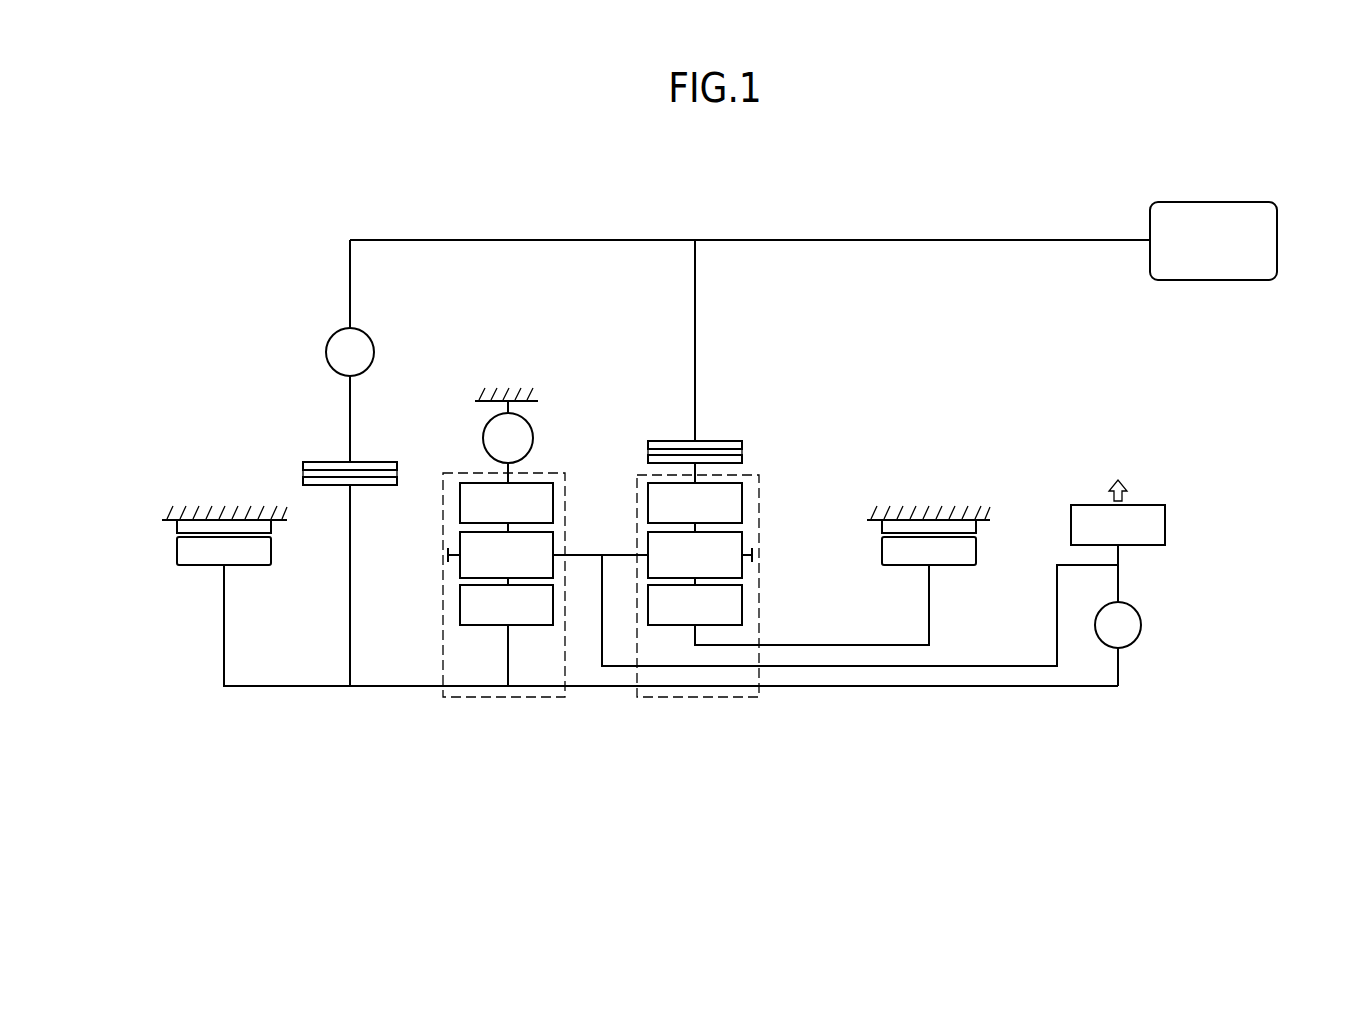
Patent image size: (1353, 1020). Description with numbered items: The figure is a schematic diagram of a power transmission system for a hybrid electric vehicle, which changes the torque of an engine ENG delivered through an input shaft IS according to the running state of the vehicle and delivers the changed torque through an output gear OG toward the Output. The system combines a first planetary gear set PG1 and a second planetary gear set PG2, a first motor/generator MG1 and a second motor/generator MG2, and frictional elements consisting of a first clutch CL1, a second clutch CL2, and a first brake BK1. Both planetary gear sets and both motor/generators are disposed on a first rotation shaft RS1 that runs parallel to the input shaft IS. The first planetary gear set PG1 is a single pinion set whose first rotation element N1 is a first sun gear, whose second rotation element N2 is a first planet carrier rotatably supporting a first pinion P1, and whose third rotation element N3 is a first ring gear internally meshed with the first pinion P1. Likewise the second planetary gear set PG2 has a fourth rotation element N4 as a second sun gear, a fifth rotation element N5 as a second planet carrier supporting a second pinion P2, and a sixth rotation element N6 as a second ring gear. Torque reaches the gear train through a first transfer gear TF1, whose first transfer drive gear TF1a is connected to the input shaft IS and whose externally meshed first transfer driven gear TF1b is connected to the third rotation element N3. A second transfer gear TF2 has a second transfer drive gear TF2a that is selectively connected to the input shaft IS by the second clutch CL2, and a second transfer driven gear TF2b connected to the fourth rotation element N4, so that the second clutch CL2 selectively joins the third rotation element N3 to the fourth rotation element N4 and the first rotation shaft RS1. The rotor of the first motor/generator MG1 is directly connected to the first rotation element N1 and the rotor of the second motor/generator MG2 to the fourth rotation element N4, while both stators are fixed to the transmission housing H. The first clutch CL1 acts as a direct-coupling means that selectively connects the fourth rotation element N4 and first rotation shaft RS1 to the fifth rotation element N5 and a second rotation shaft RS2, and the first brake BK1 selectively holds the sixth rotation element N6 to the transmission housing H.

The input shaft IS is at (808, 238).
The engine ENG is at (1213, 241).
The second clutch CL2 is at (350, 352).
The first clutch CL1 is at (1118, 625).
The first brake BK1 is at (508, 442).
The second transfer gear TF2 is at (258, 388).
The second transfer drive gear TF2a is at (320, 462).
The second transfer driven gear TF2b is at (302, 481).
The first transfer gear TF1 is at (787, 365).
The first transfer drive gear TF1a is at (727, 441).
The first transfer driven gear TF1b is at (742, 459).
The transmission housing H is at (188, 517).
The second motor/generator MG2 is at (189, 569).
The first motor/generator MG1 is at (873, 552).
The second planetary gear set PG2 is at (503, 699).
The first planetary gear set PG1 is at (697, 699).
The sixth rotation element N6 is at (506, 503).
The second pinion P2 is at (506, 555).
The fourth rotation element N4 is at (506, 605).
The fifth rotation element N5 is at (583, 548).
The third rotation element N3 is at (695, 503).
The first pinion P1 is at (695, 555).
The first rotation element N1 is at (695, 605).
The second rotation element N2 is at (612, 556).
The first rotation shaft RS1 is at (858, 688).
The second rotation shaft RS2 is at (993, 668).
The output gear OG is at (1118, 525).
The output Output is at (1118, 473).